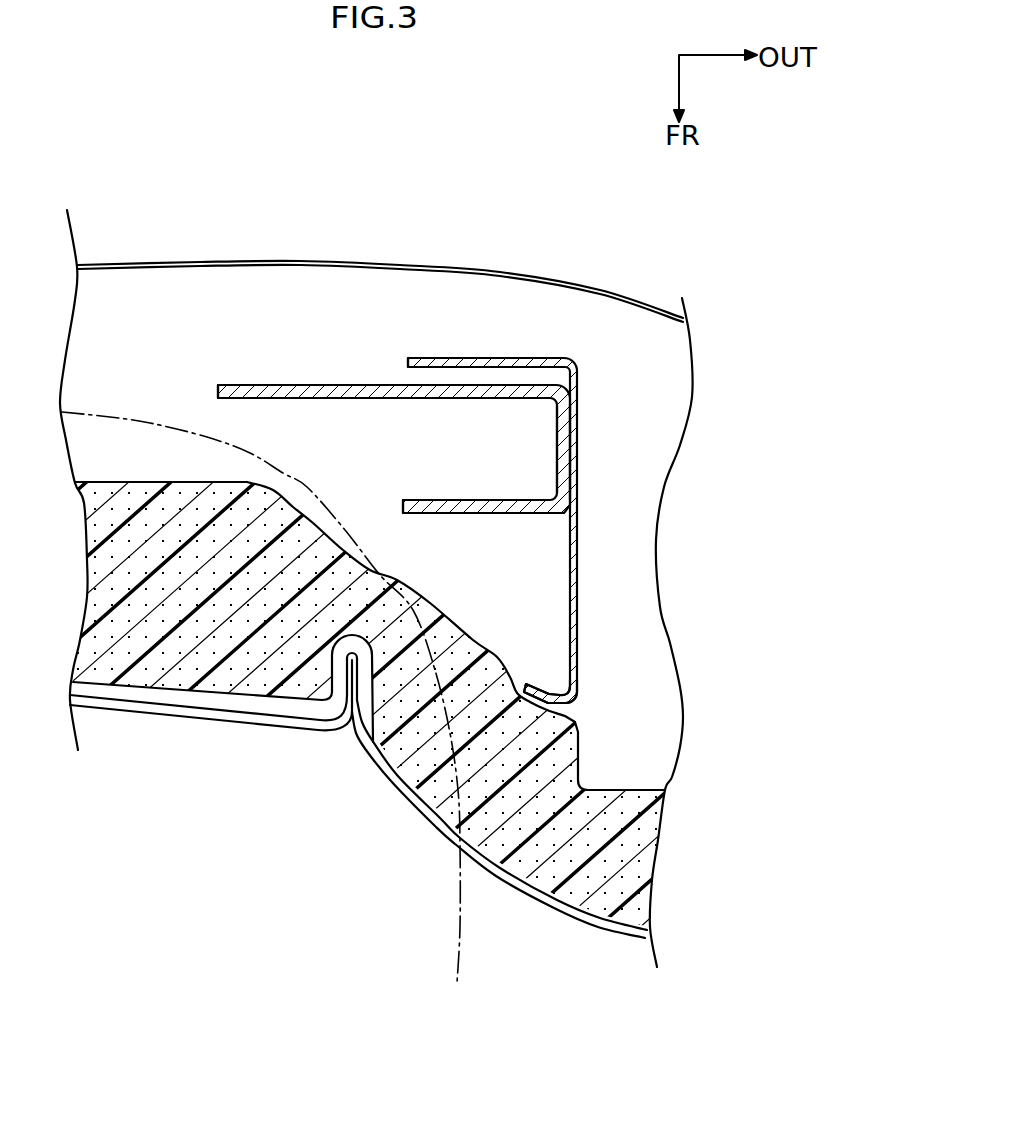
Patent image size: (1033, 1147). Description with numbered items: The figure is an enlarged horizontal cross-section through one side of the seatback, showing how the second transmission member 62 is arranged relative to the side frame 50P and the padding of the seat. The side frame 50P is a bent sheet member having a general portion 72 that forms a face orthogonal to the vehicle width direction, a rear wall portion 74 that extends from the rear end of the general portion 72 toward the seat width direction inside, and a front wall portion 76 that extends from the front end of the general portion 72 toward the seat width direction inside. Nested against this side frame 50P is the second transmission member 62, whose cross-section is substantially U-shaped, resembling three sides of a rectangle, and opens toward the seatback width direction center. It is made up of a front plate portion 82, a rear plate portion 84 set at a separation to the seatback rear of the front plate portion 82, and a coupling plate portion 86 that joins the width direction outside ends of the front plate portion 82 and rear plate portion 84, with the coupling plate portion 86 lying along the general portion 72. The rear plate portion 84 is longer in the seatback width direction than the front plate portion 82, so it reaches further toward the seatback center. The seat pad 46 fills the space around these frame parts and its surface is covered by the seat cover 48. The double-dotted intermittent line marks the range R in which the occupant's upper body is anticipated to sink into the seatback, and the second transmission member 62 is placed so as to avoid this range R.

The seat pad 46 is at (577, 892).
The seat cover 48 is at (147, 708).
The side frame 50P is at (579, 598).
The second transmission member 62 is at (394, 443).
The general portion 72 is at (528, 523).
The rear wall portion 74 is at (470, 357).
The front wall portion 76 is at (537, 707).
The front plate portion 82 is at (425, 514).
The rear plate portion 84 is at (287, 384).
The coupling plate portion 86 is at (556, 436).
The range R is at (458, 907).